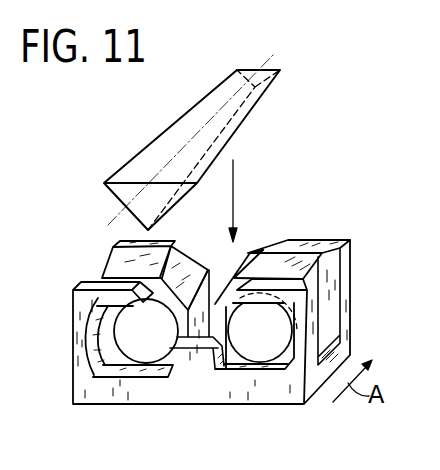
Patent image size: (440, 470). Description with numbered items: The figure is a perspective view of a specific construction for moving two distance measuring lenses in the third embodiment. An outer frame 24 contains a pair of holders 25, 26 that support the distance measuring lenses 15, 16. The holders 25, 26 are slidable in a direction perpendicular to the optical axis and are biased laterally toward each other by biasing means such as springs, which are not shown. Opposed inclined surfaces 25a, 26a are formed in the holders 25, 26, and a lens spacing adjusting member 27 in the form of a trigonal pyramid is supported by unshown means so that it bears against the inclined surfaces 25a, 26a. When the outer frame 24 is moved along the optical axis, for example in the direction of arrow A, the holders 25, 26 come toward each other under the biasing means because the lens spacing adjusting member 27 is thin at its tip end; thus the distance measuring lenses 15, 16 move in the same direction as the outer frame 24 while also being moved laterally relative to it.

The lens spacing adjusting member 27 is at (211, 102).
The holder 26 is at (120, 268).
The inclined surface 26a is at (206, 252).
The inclined surface 25a is at (222, 258).
The holder 25 is at (307, 253).
The distance measuring lens 16 is at (160, 346).
The distance measuring lens 15 is at (258, 343).
The outer frame 24 is at (270, 406).